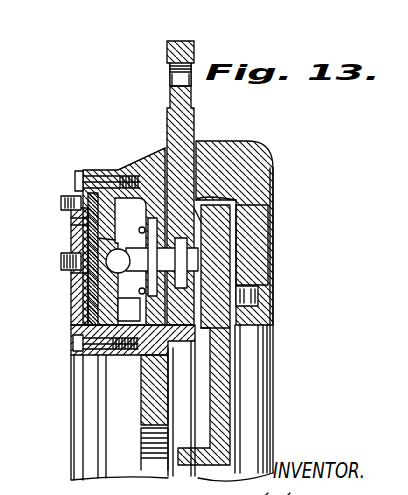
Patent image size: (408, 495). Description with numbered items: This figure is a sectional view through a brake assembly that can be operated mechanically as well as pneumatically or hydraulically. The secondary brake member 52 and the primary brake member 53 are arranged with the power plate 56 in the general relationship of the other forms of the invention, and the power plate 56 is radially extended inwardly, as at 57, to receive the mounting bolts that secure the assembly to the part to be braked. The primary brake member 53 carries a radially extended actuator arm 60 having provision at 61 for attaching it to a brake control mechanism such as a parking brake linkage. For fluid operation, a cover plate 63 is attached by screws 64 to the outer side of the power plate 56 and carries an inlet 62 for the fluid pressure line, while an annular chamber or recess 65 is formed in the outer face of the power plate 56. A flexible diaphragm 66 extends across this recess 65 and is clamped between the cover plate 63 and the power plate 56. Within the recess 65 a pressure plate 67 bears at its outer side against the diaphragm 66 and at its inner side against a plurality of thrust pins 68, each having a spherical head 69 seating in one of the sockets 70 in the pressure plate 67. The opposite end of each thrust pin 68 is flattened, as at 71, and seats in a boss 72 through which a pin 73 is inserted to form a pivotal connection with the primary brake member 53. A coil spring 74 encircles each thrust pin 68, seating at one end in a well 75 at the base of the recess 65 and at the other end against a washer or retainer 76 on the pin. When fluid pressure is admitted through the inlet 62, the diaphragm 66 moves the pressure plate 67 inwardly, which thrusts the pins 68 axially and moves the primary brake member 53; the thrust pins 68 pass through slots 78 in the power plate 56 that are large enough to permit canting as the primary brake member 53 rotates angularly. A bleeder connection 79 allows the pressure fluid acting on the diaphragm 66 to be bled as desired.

The secondary brake member 52 is at (247, 262).
The primary brake member 53 is at (186, 316).
The power plate 56 is at (157, 141).
The radially extended inward portion of power plate 57 is at (133, 412).
The actuator arm 60 is at (184, 111).
The attaching provision 61 is at (186, 56).
The inlet 62 is at (53, 251).
The cover plate 63 is at (63, 216).
The screws 64 is at (68, 162).
The annular chamber or recess 65 is at (107, 162).
The flexible diaphragm 66 is at (67, 184).
The pressure plate 67 is at (78, 290).
The thrust pins 68 is at (152, 257).
The spherical head 69 is at (70, 267).
The sockets 70 is at (90, 240).
The flattened end of thrust pin 71 is at (237, 246).
The boss 72 is at (243, 283).
The pin 73 is at (208, 244).
The coil spring 74 is at (129, 304).
The well 75 is at (150, 222).
The washer or retainer 76 is at (85, 278).
The slots 78 is at (195, 233).
The bleeder connection 79 is at (53, 200).